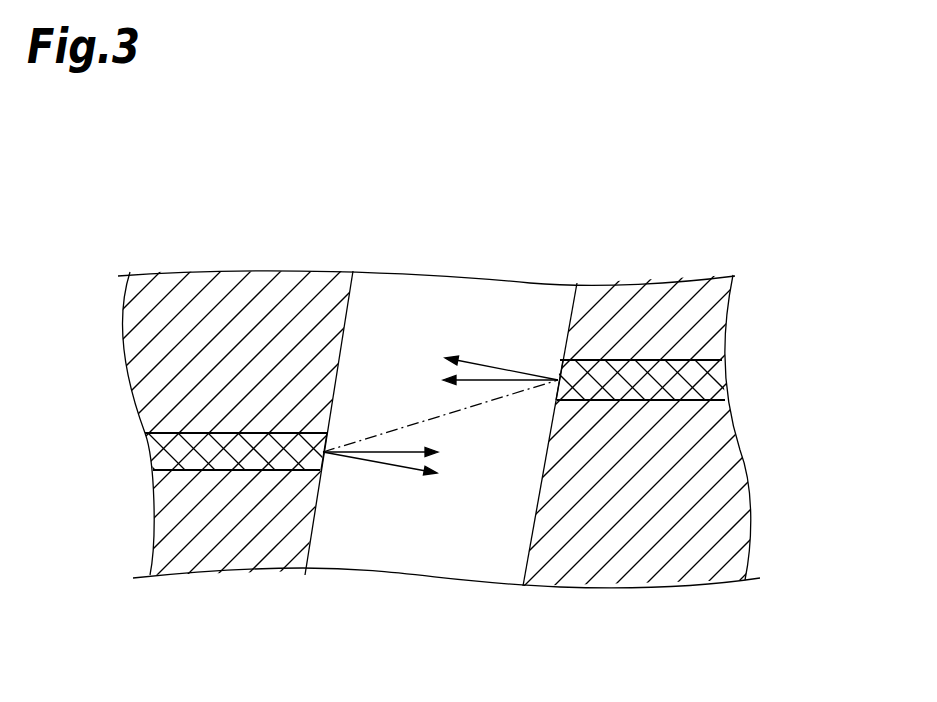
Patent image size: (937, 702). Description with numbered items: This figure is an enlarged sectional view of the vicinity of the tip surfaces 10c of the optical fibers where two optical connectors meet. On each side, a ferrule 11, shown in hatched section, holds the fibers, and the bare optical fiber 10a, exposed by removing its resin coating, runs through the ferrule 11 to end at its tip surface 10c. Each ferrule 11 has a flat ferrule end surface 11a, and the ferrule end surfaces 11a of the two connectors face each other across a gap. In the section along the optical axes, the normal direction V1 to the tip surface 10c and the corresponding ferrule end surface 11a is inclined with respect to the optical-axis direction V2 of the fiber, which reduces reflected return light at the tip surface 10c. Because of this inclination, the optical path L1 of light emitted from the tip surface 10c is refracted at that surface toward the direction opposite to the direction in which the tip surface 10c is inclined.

The ferrule 11 is at (233, 273).
The ferrule end surface 11a is at (360, 296).
The bare optical fiber 10a is at (160, 452).
The tip surface 10c is at (557, 375).
The normal direction V1 is at (480, 365).
The optical-axis direction V2 is at (378, 450).
The optical path L1 is at (472, 412).